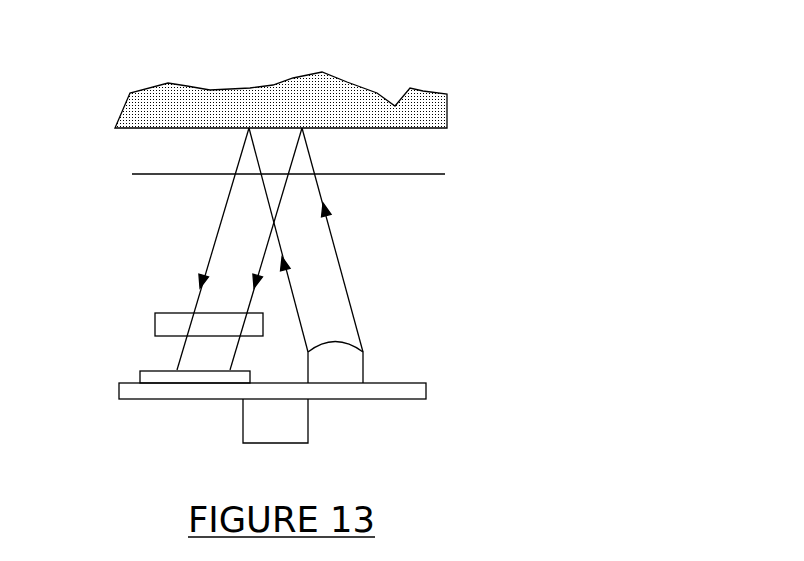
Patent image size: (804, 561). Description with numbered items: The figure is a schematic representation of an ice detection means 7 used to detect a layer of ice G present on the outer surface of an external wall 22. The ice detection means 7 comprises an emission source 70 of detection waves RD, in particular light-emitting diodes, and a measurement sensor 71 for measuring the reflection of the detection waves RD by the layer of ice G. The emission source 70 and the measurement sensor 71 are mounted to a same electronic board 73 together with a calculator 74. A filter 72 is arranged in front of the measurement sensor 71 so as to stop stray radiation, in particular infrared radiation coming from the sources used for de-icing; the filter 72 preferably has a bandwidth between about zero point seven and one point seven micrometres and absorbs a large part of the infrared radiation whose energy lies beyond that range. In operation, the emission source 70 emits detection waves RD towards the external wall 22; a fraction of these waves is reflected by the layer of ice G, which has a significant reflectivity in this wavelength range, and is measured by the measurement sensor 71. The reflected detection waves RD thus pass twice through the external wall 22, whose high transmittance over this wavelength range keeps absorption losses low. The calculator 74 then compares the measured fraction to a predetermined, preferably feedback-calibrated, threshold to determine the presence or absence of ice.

The ice detection means 7 is at (110, 410).
The external wall 22 is at (400, 175).
The emission source 70 is at (363, 363).
The measurement sensor 71 is at (140, 380).
The filter 72 is at (153, 327).
The electronic board 73 is at (427, 388).
The calculator 74 is at (310, 418).
The layer of ice G is at (187, 86).
The detection waves RD is at (282, 249).